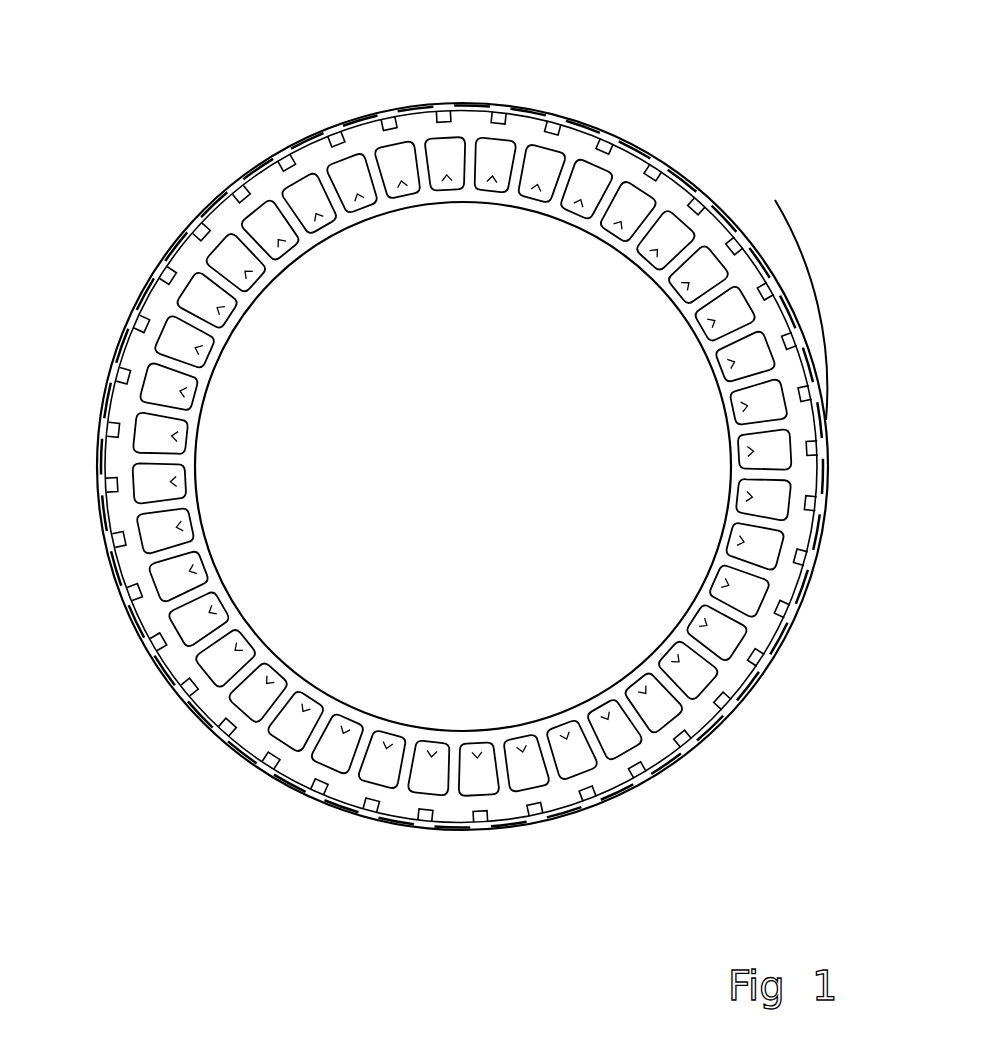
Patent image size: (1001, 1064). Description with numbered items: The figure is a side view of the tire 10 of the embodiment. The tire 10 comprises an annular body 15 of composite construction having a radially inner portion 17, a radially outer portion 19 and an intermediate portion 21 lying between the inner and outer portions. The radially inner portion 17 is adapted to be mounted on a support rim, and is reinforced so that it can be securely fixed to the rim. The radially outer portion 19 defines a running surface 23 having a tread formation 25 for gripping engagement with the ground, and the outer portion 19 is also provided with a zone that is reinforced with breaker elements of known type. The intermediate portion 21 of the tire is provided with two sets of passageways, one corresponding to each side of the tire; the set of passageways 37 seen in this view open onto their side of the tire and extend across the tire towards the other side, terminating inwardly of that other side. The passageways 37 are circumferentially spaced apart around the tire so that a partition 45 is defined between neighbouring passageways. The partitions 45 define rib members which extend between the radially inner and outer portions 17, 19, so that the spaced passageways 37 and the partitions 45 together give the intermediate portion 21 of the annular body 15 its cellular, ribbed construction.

The tire 10 is at (322, 122).
The annular body 15 is at (527, 120).
The radially inner portion 17 is at (535, 203).
The radially outer portion 19 is at (635, 158).
The intermediate portion 21 is at (665, 240).
The running surface 23 is at (815, 360).
The tread formation 25 is at (823, 417).
The passageways 37 is at (775, 493).
The partition 45 is at (740, 610).